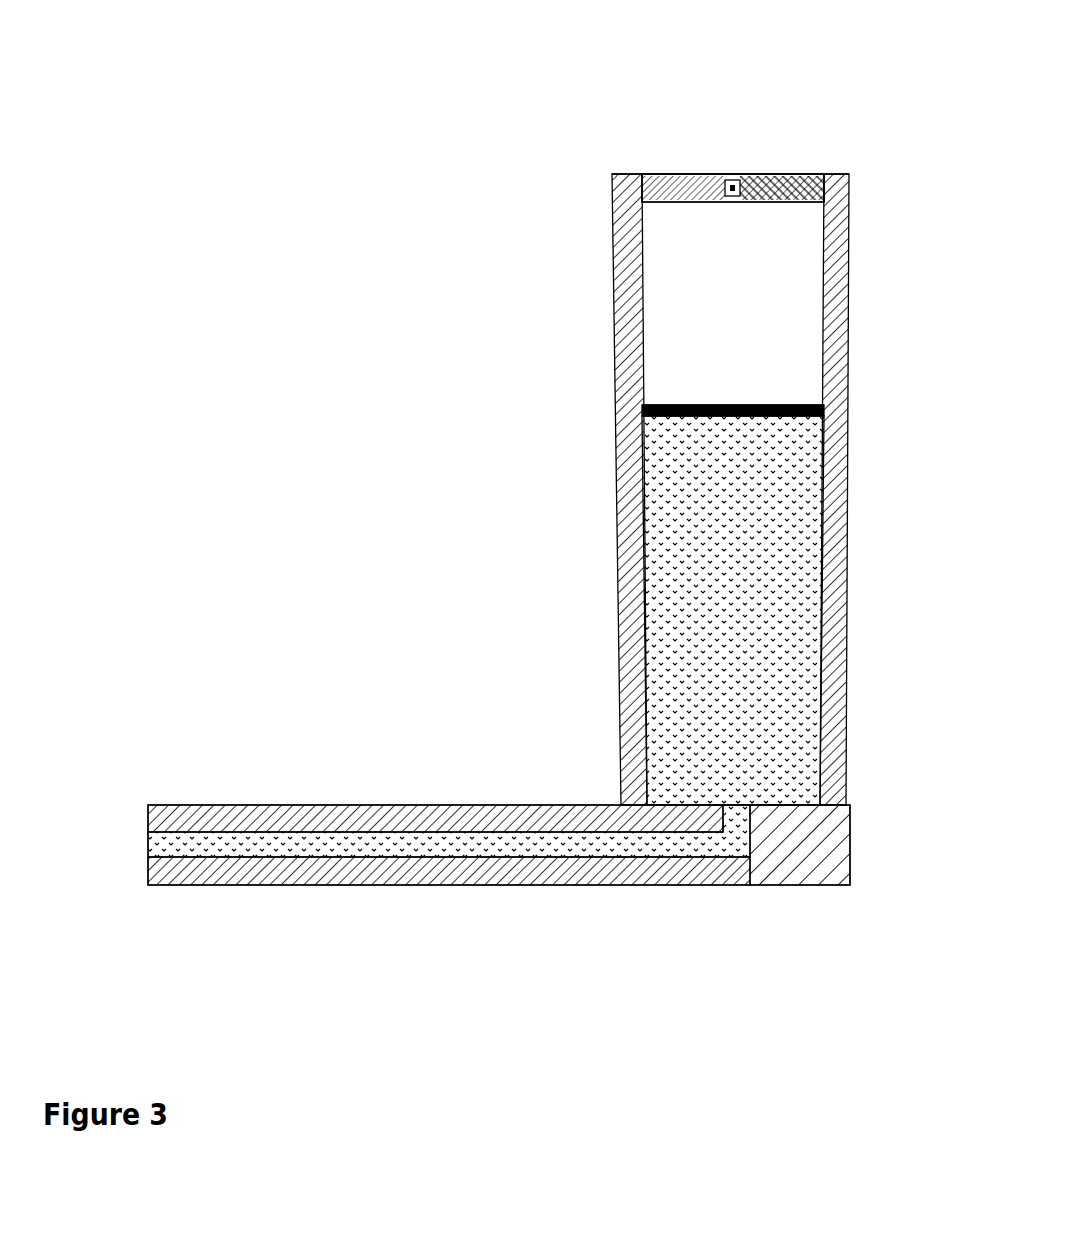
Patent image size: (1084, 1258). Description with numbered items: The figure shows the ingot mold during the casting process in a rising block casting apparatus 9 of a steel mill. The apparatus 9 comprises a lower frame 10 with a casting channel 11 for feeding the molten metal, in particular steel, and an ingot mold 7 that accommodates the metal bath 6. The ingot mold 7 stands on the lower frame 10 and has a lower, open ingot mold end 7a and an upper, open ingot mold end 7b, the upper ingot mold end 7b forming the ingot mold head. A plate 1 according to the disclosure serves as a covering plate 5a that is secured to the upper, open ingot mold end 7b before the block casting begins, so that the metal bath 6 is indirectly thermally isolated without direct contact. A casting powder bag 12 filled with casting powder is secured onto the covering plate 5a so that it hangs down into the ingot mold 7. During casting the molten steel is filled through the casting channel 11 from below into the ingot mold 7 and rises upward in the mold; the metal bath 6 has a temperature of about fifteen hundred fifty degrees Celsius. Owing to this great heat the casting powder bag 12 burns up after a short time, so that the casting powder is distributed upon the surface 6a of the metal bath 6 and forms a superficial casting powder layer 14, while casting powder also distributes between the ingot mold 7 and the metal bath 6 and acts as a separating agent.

The plate 1 is at (779, 174).
The covering plate 5a is at (779, 174).
The metal bath 6 is at (700, 525).
The surface of the metal bath 6a is at (727, 408).
The ingot mold 7 is at (614, 382).
The lower ingot mold end 7a is at (583, 790).
The upper ingot mold end 7b is at (590, 165).
The apparatus 9 is at (213, 92).
The lower frame 10 is at (240, 885).
The casting channel 11 is at (463, 845).
The casting powder bag 12 is at (736, 176).
The casting powder layer 14 is at (640, 412).